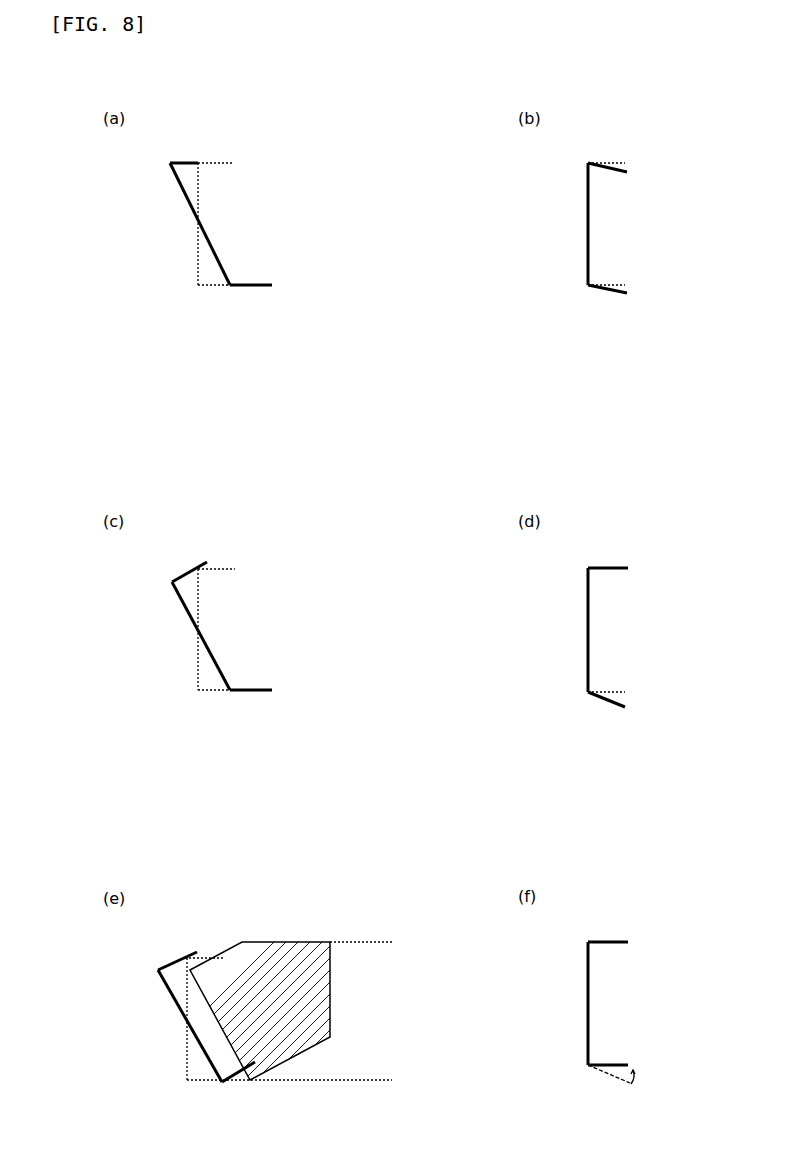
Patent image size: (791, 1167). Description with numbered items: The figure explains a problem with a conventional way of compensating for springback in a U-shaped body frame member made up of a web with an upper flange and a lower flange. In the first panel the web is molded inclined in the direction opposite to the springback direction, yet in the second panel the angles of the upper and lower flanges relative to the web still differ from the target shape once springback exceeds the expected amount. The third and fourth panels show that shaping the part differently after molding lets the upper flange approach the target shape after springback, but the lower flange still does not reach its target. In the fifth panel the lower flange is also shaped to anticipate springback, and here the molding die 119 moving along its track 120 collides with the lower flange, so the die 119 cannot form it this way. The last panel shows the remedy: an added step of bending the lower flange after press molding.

The molding die 119 is at (270, 968).
The track 120 is at (337, 1080).